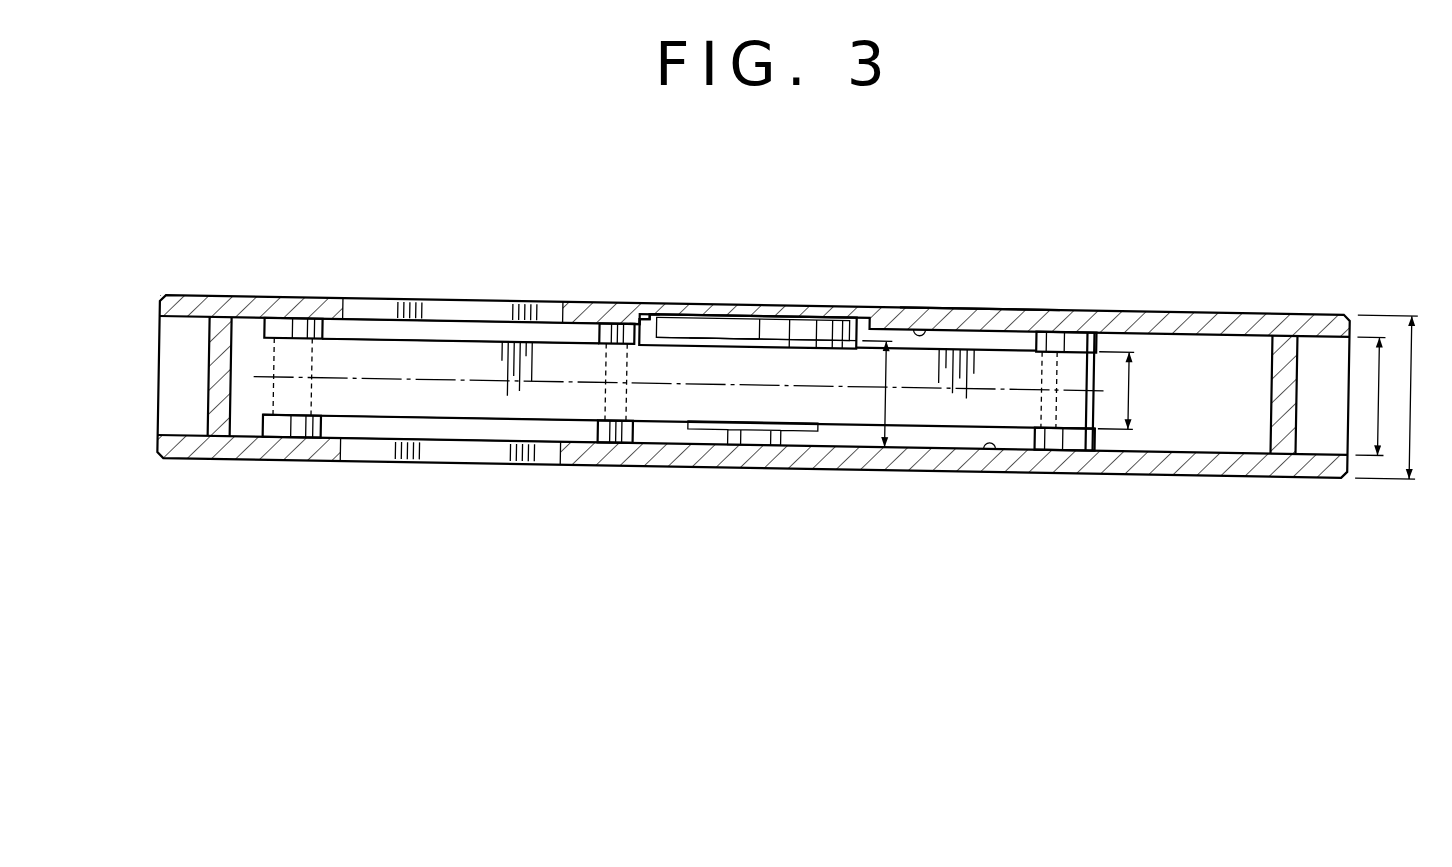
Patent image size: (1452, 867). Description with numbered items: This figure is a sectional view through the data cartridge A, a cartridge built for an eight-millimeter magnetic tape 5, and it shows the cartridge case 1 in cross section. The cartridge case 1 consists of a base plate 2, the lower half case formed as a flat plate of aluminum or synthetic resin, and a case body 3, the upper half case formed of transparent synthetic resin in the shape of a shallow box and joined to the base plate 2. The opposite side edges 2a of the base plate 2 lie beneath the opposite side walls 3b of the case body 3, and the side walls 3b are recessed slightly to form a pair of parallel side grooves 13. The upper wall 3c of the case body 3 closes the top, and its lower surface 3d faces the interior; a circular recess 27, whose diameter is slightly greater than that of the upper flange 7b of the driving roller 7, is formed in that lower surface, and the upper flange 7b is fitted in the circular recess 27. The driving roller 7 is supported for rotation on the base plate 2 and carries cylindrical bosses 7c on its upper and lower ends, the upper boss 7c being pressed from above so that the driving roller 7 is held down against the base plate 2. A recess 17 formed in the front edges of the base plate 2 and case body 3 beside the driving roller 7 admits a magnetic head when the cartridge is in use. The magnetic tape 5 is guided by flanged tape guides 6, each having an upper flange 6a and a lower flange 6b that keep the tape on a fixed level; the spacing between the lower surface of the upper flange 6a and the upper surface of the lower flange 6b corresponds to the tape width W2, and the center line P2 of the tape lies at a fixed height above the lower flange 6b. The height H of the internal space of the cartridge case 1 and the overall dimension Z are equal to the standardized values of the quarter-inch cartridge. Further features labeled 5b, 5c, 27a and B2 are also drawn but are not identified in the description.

The cartridge case 1 is at (1034, 243).
The base plate 2 is at (938, 463).
The opposite side edges of the base plate 2a is at (183, 452).
The case body 3 is at (993, 305).
The opposite side walls of the case body 3b is at (213, 355).
The upper wall of the case body 3c is at (960, 308).
The lower surface of the upper wall 3d is at (923, 331).
The magnetic tape 5 is at (430, 350).
The upper wall of tube 5b is at (473, 343).
The lower wall of tube 5c is at (445, 422).
The flanged tape guide 6 is at (300, 325).
The upper flange of the tape guide 6a is at (318, 323).
The lower flange of the tape guide 6b is at (307, 437).
The driving roller 7 is at (778, 330).
The upper flange of the driving roller 7b is at (740, 328).
The cylindrical boss of the driving roller 7c is at (745, 442).
The side groove 13 is at (172, 366).
The recess 17 is at (570, 323).
The circular recess 27 is at (650, 318).
The holder recess 27a is at (697, 318).
The data cartridge A is at (841, 212).
The dimension B2 is at (887, 400).
The height of the internal space H is at (1380, 368).
The center line of the magnetic tape P2 is at (497, 382).
The width of the magnetic tape W2 is at (1131, 397).
The overall dimension Z is at (1412, 357).